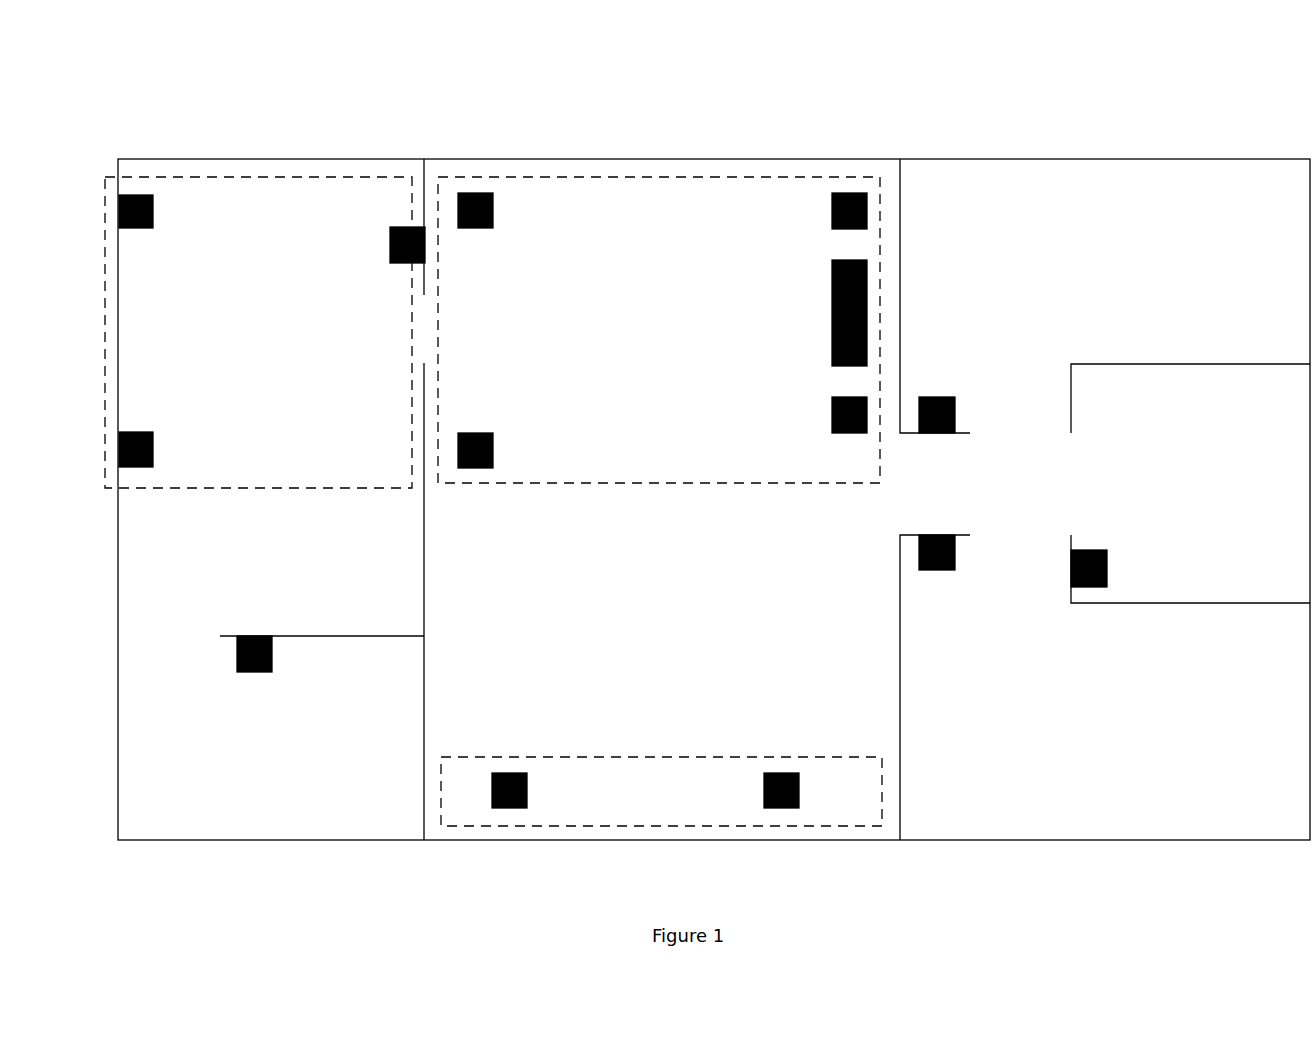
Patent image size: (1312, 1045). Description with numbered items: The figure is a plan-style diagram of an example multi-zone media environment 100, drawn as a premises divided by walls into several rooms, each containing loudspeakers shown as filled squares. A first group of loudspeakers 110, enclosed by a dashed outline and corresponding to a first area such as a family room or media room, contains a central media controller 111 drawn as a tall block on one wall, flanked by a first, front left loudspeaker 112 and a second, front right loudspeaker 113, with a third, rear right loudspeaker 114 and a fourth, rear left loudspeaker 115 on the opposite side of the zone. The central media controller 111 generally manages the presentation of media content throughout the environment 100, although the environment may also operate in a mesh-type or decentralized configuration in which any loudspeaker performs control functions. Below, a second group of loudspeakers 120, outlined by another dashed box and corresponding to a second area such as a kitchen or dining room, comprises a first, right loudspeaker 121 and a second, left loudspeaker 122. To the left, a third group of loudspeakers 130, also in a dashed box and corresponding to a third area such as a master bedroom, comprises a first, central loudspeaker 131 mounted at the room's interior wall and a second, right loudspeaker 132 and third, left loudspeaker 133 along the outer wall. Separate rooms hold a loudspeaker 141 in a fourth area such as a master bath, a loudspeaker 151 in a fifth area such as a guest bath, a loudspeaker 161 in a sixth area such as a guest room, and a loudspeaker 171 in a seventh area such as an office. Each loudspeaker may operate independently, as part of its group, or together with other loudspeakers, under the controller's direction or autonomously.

The multi-zone media environment 100 is at (150, 97).
The first group of loudspeakers 110 is at (668, 178).
The central media controller 111 is at (832, 322).
The first loudspeaker 112 is at (832, 220).
The second loudspeaker 113 is at (832, 422).
The third loudspeaker 114 is at (493, 210).
The fourth loudspeaker 115 is at (493, 450).
The second group of loudspeakers 120 is at (655, 757).
The first loudspeaker 121 is at (508, 773).
The second loudspeaker 122 is at (780, 773).
The third group of loudspeakers 130 is at (292, 177).
The first loudspeaker 131 is at (390, 250).
The second loudspeaker 132 is at (153, 212).
The third loudspeaker 133 is at (153, 450).
The loudspeaker 141 is at (258, 673).
The loudspeaker 151 is at (1107, 567).
The loudspeaker 161 is at (935, 397).
The loudspeaker 171 is at (938, 572).